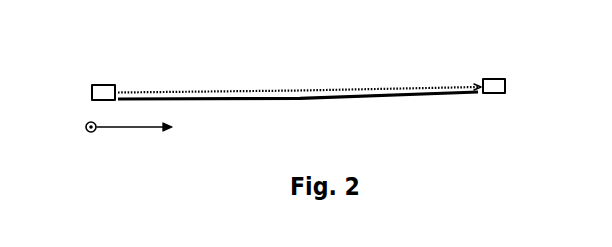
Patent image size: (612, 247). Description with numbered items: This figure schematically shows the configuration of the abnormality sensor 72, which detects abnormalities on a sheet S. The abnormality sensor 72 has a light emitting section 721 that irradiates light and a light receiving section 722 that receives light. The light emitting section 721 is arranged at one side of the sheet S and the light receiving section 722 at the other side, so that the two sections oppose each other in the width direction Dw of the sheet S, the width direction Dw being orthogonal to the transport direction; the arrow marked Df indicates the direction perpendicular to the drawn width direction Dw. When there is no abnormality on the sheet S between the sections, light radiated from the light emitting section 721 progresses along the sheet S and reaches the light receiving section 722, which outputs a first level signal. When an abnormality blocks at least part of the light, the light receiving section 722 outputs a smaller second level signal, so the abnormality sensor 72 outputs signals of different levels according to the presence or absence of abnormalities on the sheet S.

The abnormality sensor 72 is at (87, 69).
The light emitting section 721 is at (92, 90).
The light receiving section 722 is at (505, 86).
The sheet S is at (378, 98).
The width direction Dw is at (150, 127).
The feed direction Df is at (83, 136).